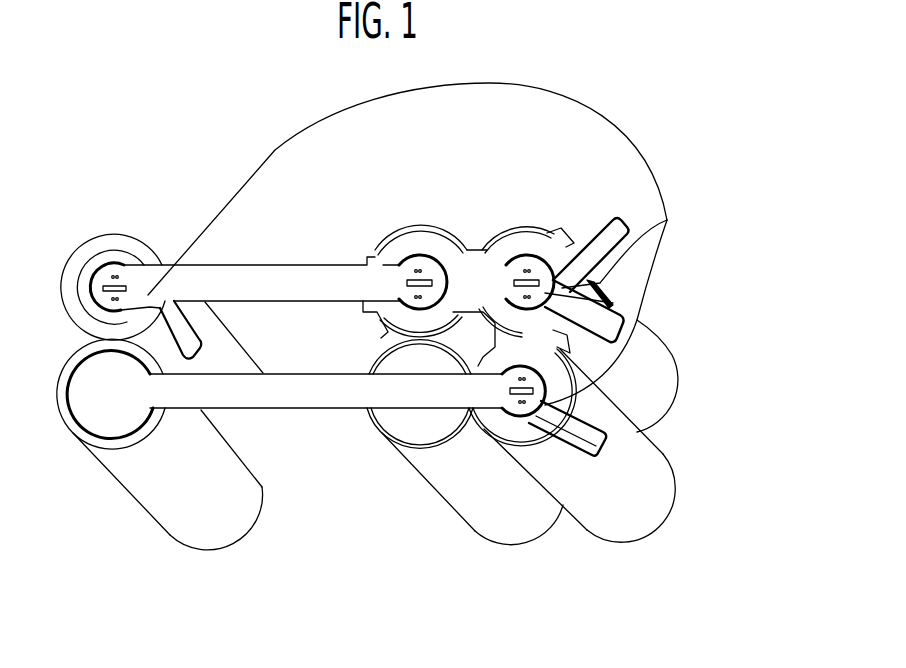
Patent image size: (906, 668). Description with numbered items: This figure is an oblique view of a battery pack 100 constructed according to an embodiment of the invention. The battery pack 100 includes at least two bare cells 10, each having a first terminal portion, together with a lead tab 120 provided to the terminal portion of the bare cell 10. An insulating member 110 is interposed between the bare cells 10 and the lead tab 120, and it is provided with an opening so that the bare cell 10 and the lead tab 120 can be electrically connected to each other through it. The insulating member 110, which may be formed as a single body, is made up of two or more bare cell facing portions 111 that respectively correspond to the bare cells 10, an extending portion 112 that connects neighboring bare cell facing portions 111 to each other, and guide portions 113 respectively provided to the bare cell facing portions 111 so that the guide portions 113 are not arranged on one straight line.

The battery pack 100 is at (757, 85).
The bare cell 10 is at (589, 548).
The insulating member 110 is at (613, 153).
The bare cell facing portion 111 is at (420, 228).
The extending portion 112 is at (468, 278).
The guide portion 113 is at (592, 230).
The lead tab 120 is at (668, 220).